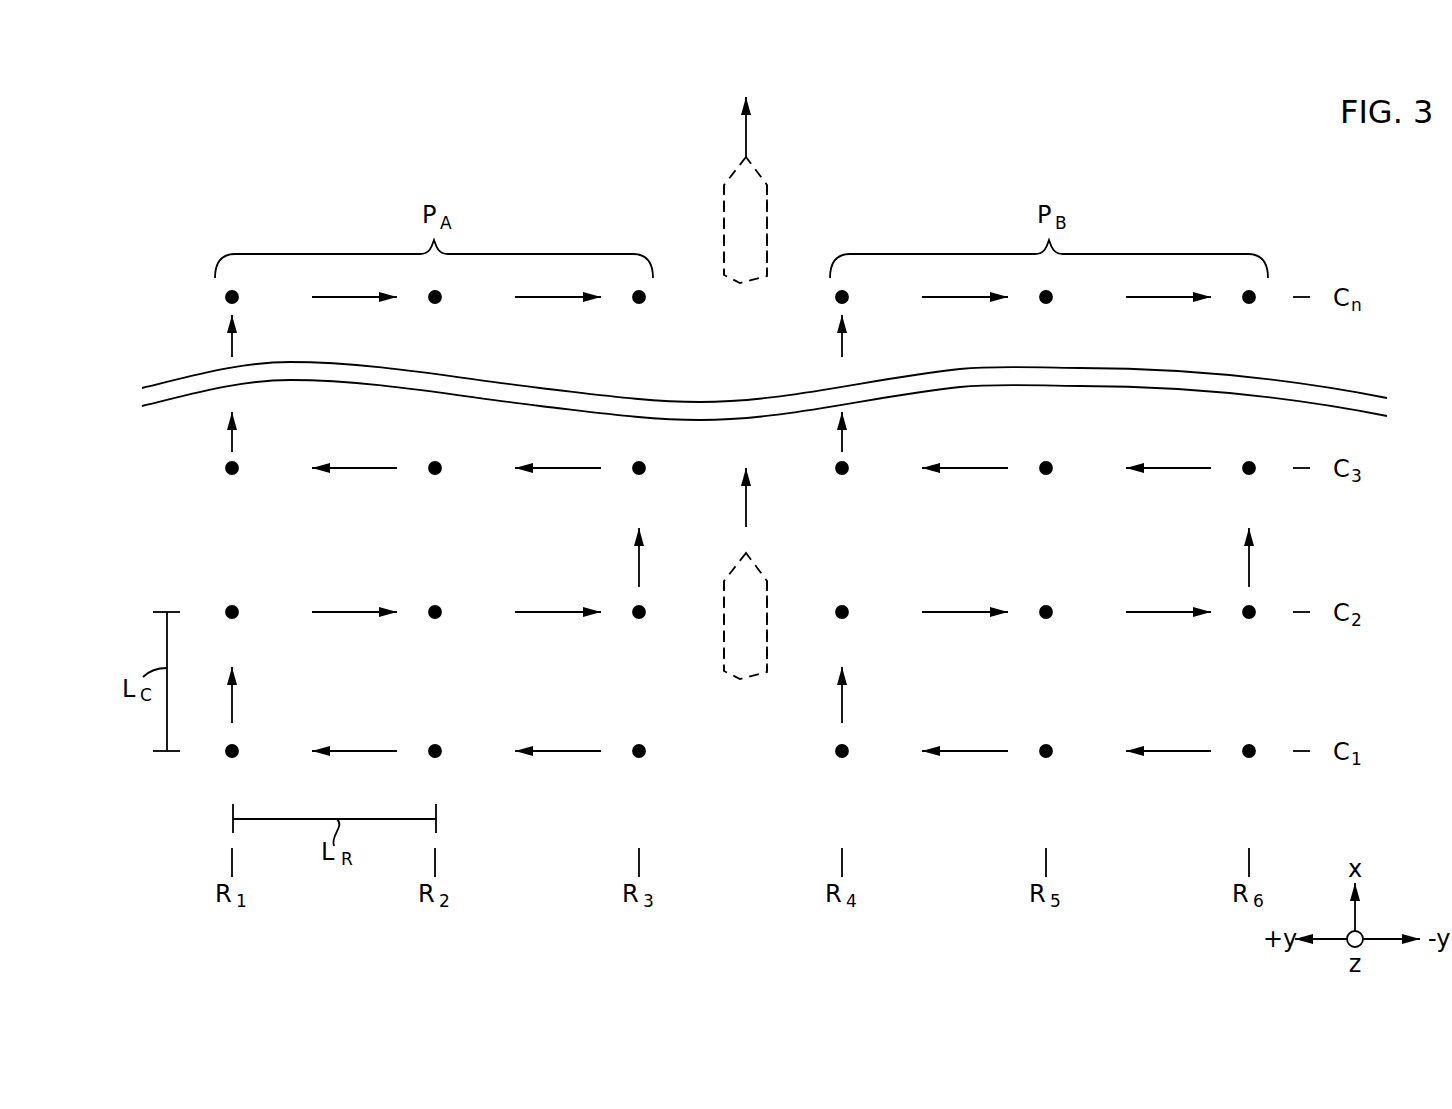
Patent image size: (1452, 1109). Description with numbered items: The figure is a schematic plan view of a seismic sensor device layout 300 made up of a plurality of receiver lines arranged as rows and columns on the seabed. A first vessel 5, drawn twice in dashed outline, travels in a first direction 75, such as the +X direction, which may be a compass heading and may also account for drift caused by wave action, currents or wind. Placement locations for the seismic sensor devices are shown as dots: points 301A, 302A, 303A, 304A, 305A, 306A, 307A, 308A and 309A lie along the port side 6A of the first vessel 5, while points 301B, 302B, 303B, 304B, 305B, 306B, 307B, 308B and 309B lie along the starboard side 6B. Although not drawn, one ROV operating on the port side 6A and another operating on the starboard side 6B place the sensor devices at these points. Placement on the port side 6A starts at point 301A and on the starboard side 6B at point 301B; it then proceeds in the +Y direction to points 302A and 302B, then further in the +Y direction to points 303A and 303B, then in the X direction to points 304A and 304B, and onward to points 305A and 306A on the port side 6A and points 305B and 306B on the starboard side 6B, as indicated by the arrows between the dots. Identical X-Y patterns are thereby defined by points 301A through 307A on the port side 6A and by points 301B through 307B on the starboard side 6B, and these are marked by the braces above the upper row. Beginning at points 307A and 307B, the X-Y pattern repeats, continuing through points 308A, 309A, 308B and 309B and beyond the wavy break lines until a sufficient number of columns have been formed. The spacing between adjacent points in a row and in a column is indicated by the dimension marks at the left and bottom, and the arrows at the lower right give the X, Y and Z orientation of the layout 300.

The seismic sensor device layout 300 is at (1290, 222).
The first vessel 5 is at (737, 243).
The port side 6A is at (724, 208).
The starboard side 6B is at (767, 228).
The first direction 75 is at (746, 140).
The point 301A is at (645, 771).
The point 302A is at (441, 771).
The point 303A is at (238, 771).
The point 304A is at (238, 632).
The point 305A is at (441, 632).
The point 306A is at (645, 632).
The point 307A is at (645, 488).
The point 308A is at (441, 488).
The point 309A is at (238, 488).
The point 301B is at (1255, 771).
The point 302B is at (1052, 771).
The point 303B is at (848, 771).
The point 304B is at (848, 632).
The point 305B is at (1052, 632).
The point 306B is at (1255, 632).
The point 307B is at (1255, 488).
The point 308B is at (1052, 488).
The point 309B is at (848, 488).